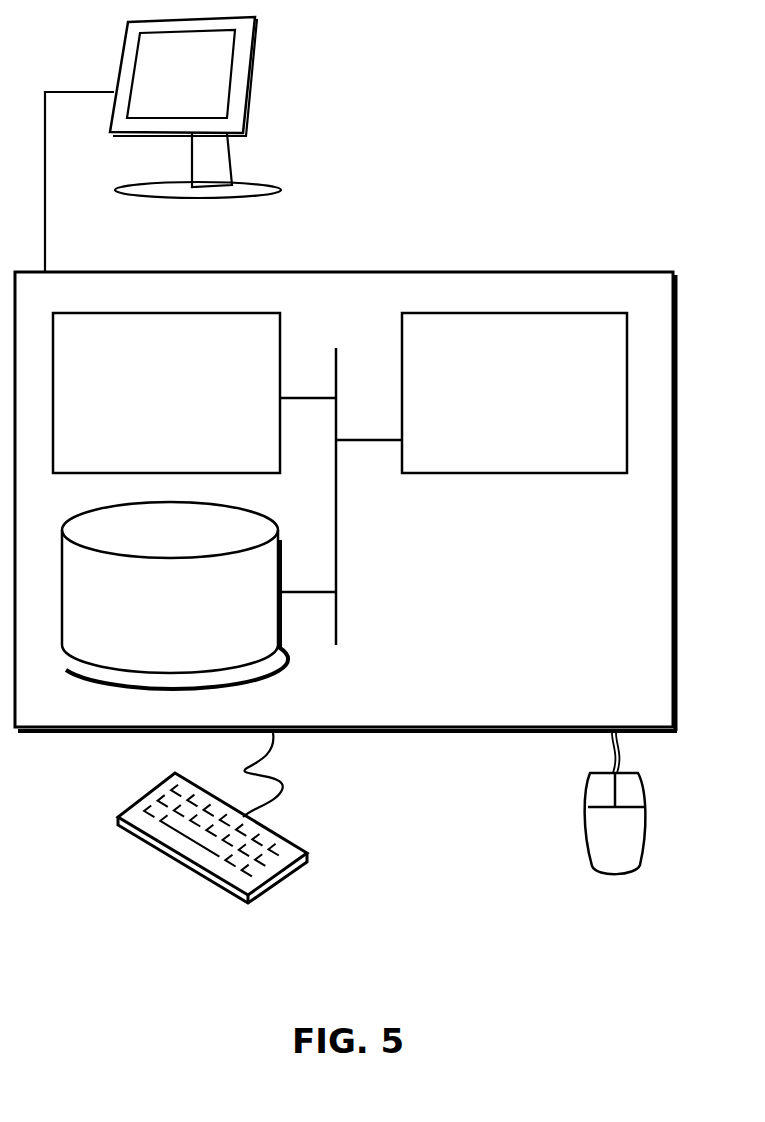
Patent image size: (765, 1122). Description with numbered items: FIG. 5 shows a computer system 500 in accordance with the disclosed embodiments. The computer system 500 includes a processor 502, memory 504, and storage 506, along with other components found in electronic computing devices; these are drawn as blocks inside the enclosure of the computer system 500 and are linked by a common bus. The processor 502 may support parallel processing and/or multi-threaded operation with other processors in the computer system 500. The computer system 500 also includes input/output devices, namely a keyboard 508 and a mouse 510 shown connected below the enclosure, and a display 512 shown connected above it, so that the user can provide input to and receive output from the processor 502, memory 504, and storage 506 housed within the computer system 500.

The computer system 500 is at (390, 250).
The processor 502 is at (539, 405).
The memory 504 is at (188, 405).
The storage 506 is at (194, 618).
The keyboard 508 is at (137, 838).
The mouse 510 is at (636, 848).
The display 512 is at (163, 144).